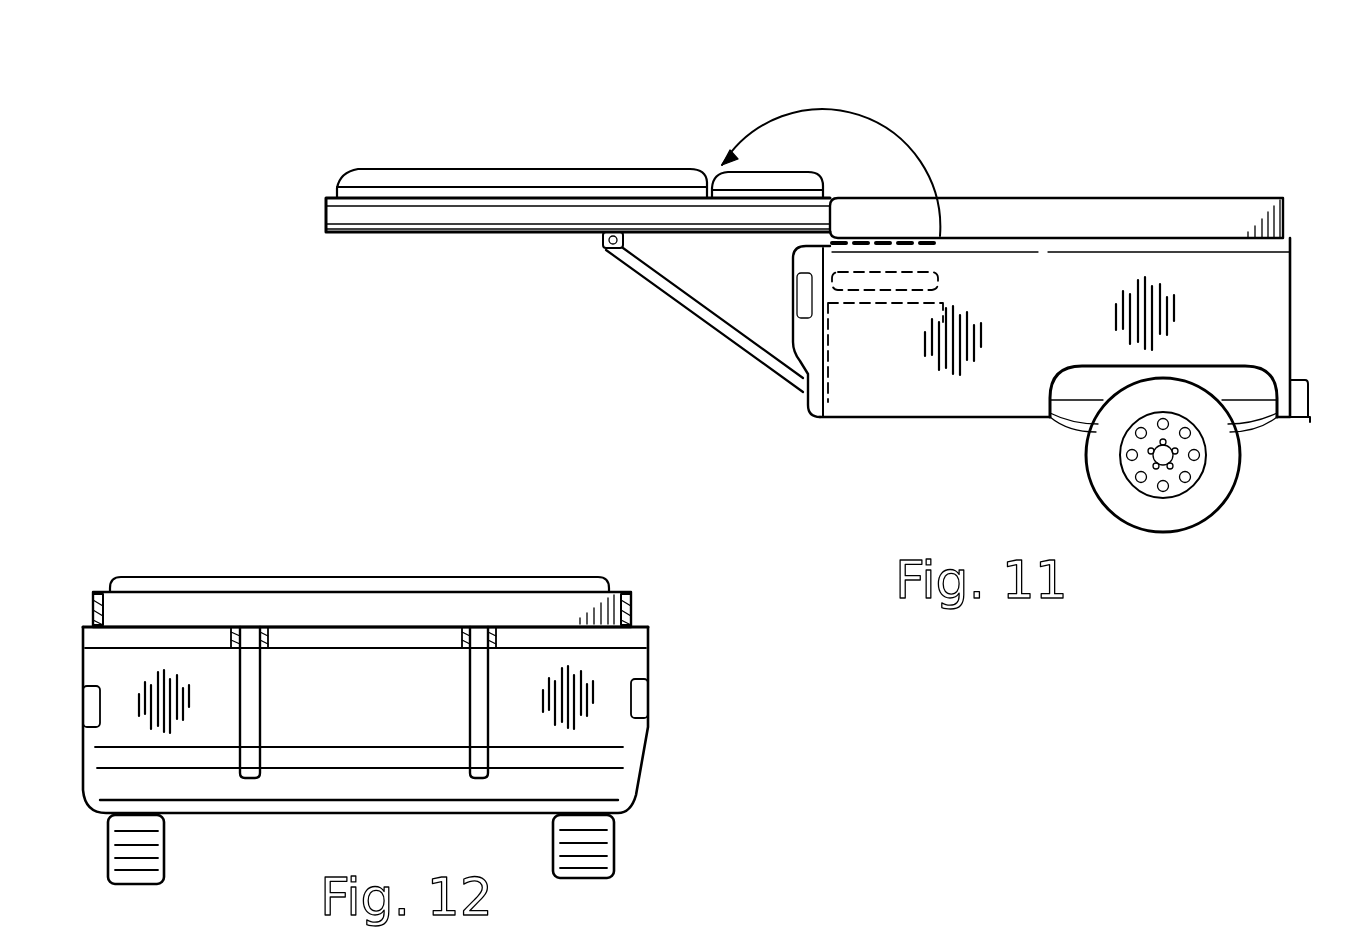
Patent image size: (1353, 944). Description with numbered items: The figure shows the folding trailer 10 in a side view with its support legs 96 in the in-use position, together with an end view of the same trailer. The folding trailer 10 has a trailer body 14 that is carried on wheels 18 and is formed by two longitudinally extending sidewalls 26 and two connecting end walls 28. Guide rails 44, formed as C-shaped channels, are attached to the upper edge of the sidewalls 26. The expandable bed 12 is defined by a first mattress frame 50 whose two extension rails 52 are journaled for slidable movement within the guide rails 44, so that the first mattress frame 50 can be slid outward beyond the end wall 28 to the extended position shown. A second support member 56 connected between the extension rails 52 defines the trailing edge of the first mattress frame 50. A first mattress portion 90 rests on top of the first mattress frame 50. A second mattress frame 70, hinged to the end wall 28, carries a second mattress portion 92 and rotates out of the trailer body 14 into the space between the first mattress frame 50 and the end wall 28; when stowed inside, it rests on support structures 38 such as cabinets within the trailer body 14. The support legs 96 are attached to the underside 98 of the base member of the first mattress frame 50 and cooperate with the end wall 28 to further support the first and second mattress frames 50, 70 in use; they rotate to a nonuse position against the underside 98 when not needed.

In FIG. 11, the folding trailer 10 is at (457, 153).
In FIG. 12, the folding trailer 10 is at (229, 548).
In FIG. 11, the expandable bed 12 is at (588, 162).
In FIG. 12, the expandable bed 12 is at (458, 575).
In FIG. 11, the trailer body 14 is at (1290, 320).
In FIG. 12, the trailer body 14 is at (648, 732).
In FIG. 11, the wheels 18 is at (1088, 470).
In FIG. 12, the wheels 18 is at (165, 845).
In FIG. 11, the sidewalls 26 is at (1236, 337).
In FIG. 11, the end walls 28 is at (790, 325).
In FIG. 12, the end walls 28 is at (387, 723).
In FIG. 11, the support structures 38 is at (918, 402).
In FIG. 11, the guide rails 44 is at (1055, 221).
In FIG. 11, the first mattress frame 50 is at (307, 203).
In FIG. 11, the extension rails 52 is at (560, 233).
In FIG. 12, the extension rails 52 is at (91, 612).
In FIG. 12, the second support member 56 is at (383, 612).
In FIG. 11, the second mattress frame 70 is at (812, 197).
In FIG. 11, the first mattress portion 90 is at (568, 140).
In FIG. 11, the second mattress portion 92 is at (772, 178).
In FIG. 12, the support legs 96 is at (292, 707).
In FIG. 11, the underside 98 is at (500, 242).